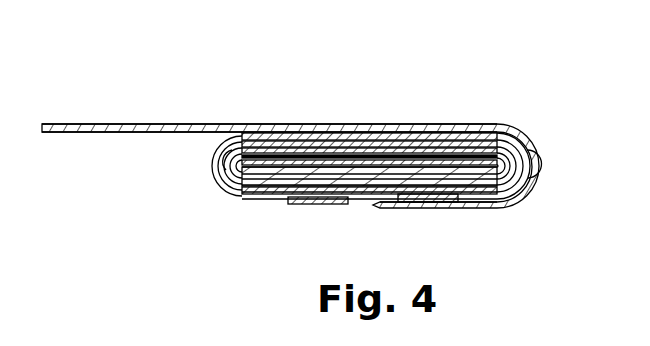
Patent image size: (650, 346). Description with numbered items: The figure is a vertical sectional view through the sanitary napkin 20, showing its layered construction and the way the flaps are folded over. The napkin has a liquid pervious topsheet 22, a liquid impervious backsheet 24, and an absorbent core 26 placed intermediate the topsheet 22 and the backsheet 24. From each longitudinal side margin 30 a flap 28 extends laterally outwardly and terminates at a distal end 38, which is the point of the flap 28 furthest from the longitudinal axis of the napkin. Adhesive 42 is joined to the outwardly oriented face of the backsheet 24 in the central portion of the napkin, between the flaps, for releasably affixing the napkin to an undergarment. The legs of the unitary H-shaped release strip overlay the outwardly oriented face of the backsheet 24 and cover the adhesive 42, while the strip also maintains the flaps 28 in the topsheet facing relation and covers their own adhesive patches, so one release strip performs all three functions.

The sanitary napkin 20 is at (150, 188).
The liquid pervious topsheet 22 is at (240, 193).
The liquid impervious backsheet 24 is at (362, 190).
The absorbent core 26 is at (262, 193).
The flap 28 is at (259, 133).
The longitudinal side margin 30 is at (214, 163).
The distal end 38 is at (367, 152).
The adhesive 42 is at (318, 127).